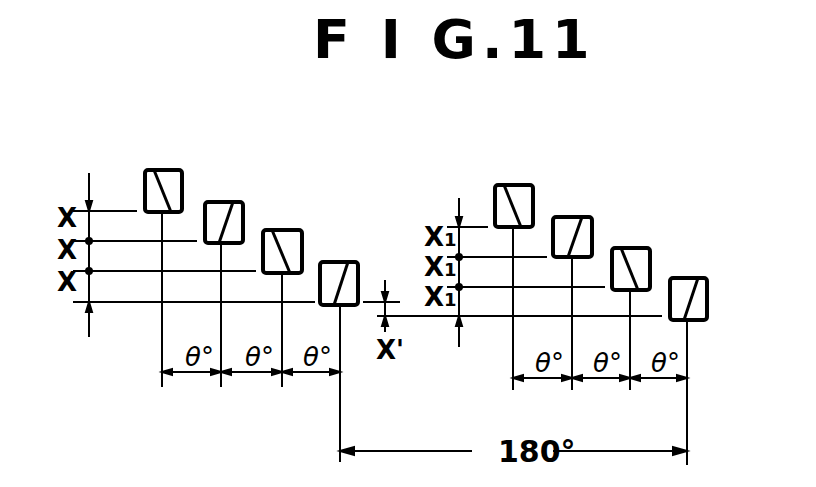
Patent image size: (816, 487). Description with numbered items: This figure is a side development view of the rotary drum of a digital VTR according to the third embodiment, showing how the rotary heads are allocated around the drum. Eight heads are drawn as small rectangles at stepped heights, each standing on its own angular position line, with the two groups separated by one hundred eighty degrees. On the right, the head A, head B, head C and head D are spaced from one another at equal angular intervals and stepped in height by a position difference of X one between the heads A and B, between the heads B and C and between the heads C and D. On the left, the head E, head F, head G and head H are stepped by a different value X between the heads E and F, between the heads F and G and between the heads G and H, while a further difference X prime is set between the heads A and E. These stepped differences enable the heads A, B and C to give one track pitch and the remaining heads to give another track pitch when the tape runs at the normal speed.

The head A is at (697, 278).
The head B is at (642, 248).
The head C is at (585, 217).
The head D is at (521, 185).
The head E is at (349, 262).
The head F is at (290, 230).
The head G is at (228, 202).
The head H is at (172, 170).